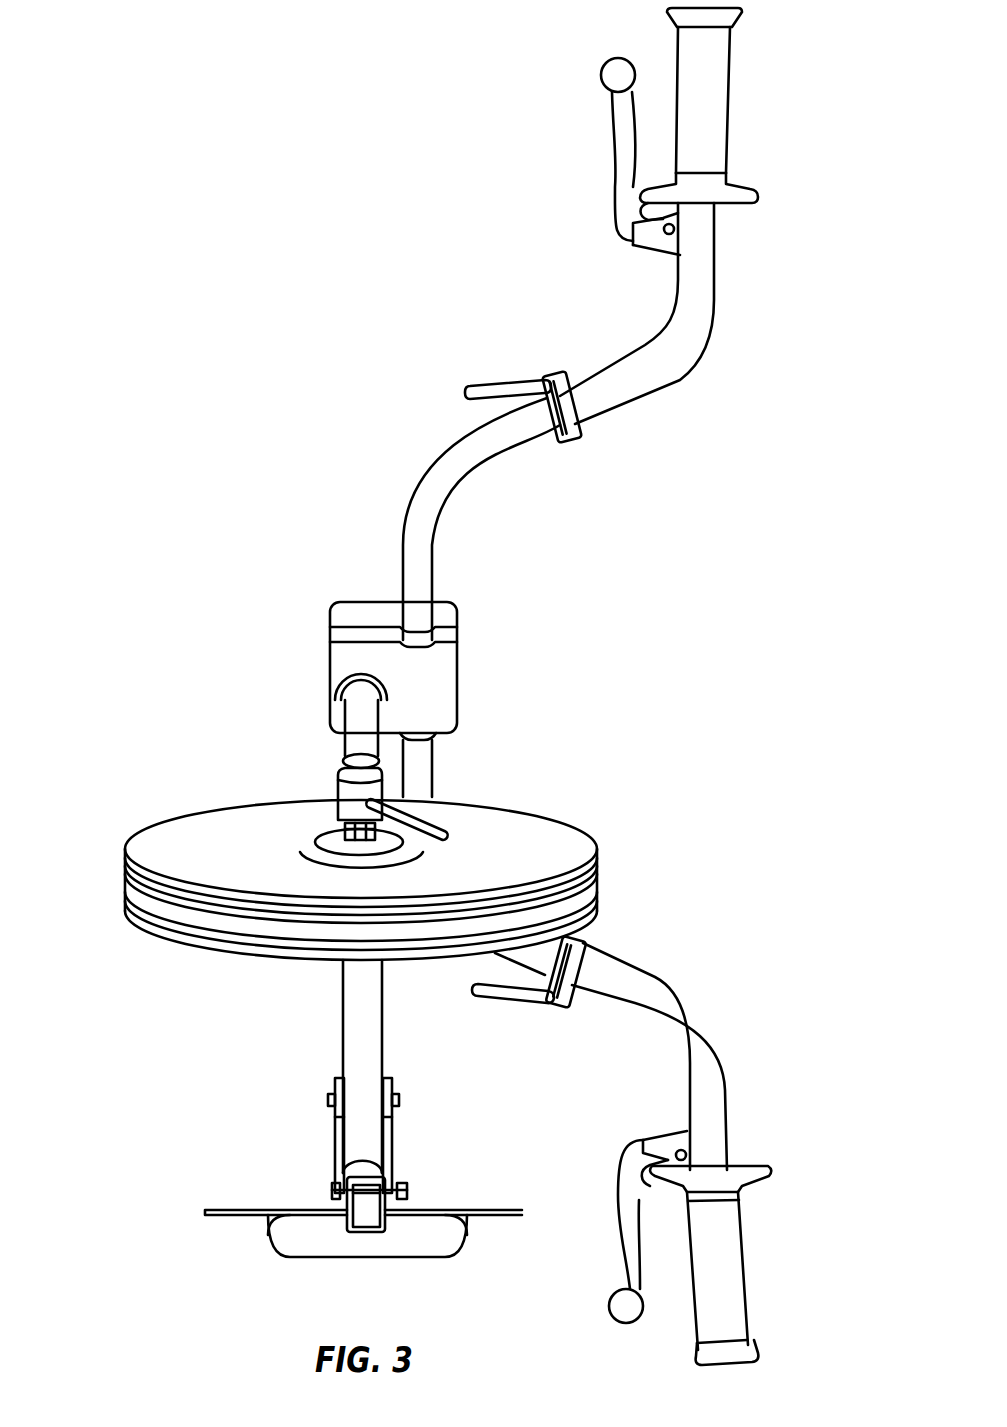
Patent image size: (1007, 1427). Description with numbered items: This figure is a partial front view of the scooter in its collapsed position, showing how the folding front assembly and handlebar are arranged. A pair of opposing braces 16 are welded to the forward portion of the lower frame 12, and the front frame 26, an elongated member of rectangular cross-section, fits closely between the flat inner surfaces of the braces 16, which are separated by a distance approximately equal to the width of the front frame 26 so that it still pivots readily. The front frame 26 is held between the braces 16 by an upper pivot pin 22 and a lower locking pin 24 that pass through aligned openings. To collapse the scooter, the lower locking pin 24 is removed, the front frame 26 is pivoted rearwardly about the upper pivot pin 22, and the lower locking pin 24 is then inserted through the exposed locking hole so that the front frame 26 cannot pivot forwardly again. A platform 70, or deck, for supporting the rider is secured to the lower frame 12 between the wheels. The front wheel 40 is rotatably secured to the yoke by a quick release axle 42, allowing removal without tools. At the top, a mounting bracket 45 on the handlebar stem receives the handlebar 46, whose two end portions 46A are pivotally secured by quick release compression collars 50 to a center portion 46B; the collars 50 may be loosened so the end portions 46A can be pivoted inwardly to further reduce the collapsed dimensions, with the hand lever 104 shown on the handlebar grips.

The lower frame 12 is at (270, 1247).
The braces 16 is at (335, 1140).
The upper pivot pin 22 is at (400, 1100).
The lower locking pin 24 is at (407, 1190).
The front frame 26 is at (357, 1000).
The front wheel 40 is at (149, 848).
The quick release axle 42 is at (352, 793).
The mounting bracket 45 is at (447, 692).
The handlebar 46 is at (455, 445).
The end portions 46A is at (698, 290).
The center portion 46B is at (432, 498).
The quick release compression collars 50 is at (545, 376).
The platform 70 is at (207, 1212).
The lever 104 is at (618, 126).